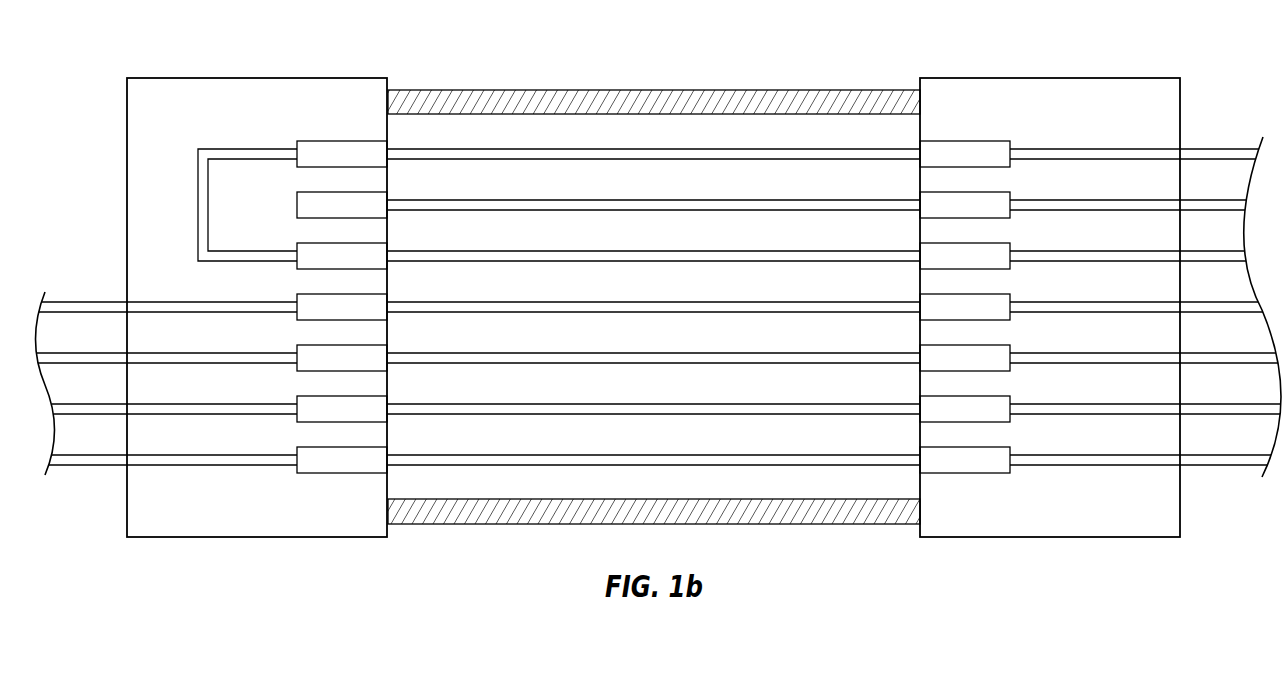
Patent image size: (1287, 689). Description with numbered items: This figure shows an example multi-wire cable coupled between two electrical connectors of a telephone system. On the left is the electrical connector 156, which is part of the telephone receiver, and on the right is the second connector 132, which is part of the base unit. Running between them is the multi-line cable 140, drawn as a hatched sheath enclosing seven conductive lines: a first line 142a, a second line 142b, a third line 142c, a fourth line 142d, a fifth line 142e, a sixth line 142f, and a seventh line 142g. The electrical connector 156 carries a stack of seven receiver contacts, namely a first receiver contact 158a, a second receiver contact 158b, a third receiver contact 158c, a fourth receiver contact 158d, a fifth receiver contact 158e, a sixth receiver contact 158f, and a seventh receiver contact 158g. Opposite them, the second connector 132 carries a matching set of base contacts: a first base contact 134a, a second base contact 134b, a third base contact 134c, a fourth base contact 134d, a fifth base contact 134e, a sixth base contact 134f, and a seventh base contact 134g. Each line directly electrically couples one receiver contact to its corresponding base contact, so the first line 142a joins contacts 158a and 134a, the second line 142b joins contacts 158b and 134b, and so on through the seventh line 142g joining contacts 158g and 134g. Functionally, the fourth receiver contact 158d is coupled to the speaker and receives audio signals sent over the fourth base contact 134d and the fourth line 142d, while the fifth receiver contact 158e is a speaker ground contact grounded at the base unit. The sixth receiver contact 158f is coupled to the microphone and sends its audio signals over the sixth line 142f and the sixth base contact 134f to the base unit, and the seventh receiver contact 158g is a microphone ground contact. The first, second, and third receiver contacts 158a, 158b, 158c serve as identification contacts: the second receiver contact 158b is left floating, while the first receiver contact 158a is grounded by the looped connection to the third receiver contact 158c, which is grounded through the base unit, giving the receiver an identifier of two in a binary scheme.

The second connector 132 is at (1014, 78).
The first base contact 134a is at (1010, 143).
The second base contact 134b is at (1010, 194).
The third base contact 134c is at (1010, 245).
The fourth base contact 134d is at (1010, 296).
The fifth base contact 134e is at (1010, 347).
The sixth base contact 134f is at (1010, 398).
The seventh base contact 134g is at (1010, 449).
The multi-line cable 140 is at (627, 90).
The first line 142a is at (627, 149).
The second line 142b is at (627, 200).
The third line 142c is at (627, 251).
The fourth line 142d is at (627, 302).
The fifth line 142e is at (627, 353).
The sixth line 142f is at (627, 404).
The seventh line 142g is at (627, 455).
The electrical connector 156 is at (283, 78).
The first receiver contact 158a is at (297, 142).
The second receiver contact 158b is at (297, 193).
The third receiver contact 158c is at (297, 244).
The fourth receiver contact 158d is at (297, 295).
The fifth receiver contact 158e is at (297, 346).
The sixth receiver contact 158f is at (297, 397).
The seventh receiver contact 158g is at (297, 448).